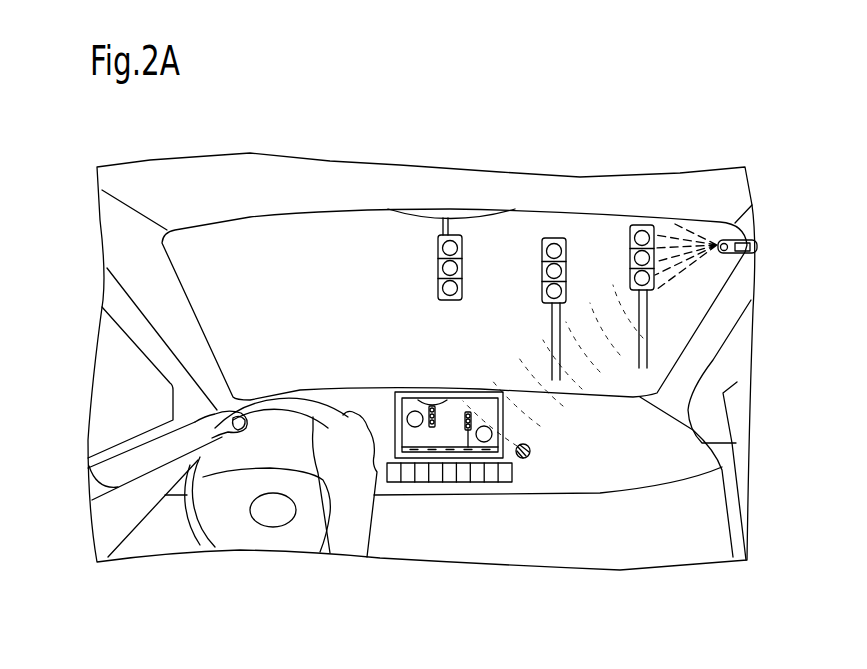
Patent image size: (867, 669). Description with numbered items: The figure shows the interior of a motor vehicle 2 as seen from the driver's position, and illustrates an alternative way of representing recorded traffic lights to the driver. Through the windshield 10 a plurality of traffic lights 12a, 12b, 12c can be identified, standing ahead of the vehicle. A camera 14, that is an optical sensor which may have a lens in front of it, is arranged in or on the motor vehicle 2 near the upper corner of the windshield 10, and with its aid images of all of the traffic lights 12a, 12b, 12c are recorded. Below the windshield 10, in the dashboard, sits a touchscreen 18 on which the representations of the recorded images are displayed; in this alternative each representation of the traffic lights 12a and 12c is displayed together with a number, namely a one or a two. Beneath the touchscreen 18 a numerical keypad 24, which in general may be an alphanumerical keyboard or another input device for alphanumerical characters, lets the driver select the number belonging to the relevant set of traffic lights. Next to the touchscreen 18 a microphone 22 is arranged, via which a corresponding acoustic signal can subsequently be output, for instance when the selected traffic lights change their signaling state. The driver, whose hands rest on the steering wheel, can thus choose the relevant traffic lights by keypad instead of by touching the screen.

The motor vehicle 2 is at (572, 548).
The windshield 10 is at (370, 248).
The traffic lights 12a is at (441, 235).
The traffic lights 12b is at (545, 245).
The traffic lights 12c is at (631, 235).
The camera 14 is at (722, 243).
The touchscreen 18 is at (405, 398).
The microphone 22 is at (531, 451).
The numerical keypad 24 is at (423, 482).